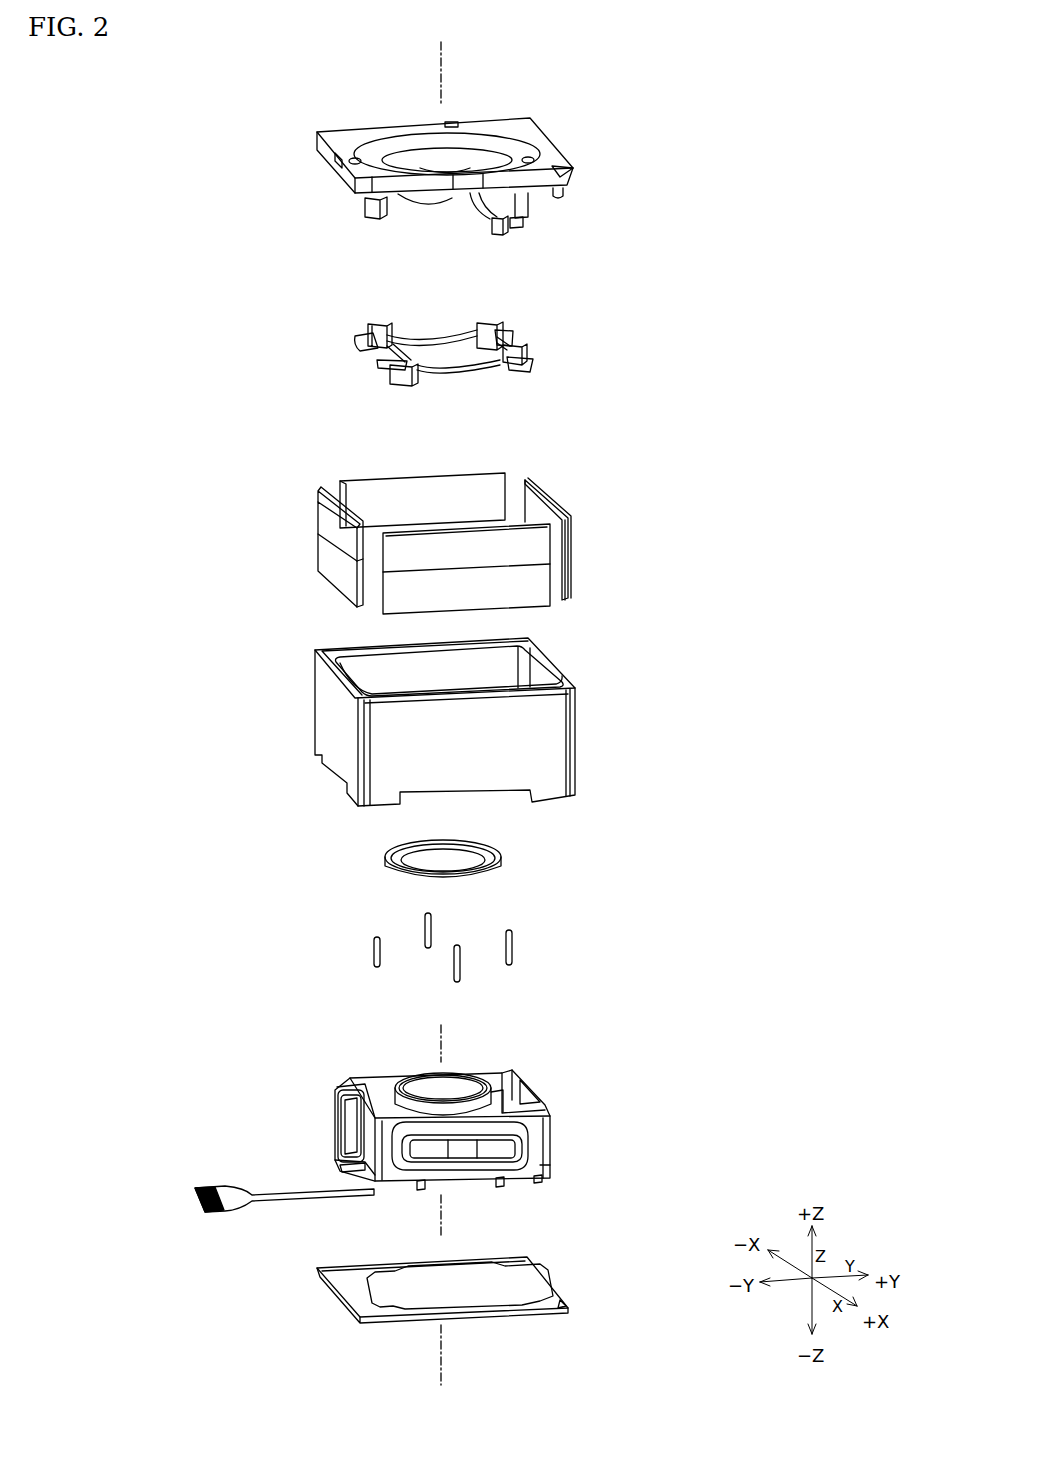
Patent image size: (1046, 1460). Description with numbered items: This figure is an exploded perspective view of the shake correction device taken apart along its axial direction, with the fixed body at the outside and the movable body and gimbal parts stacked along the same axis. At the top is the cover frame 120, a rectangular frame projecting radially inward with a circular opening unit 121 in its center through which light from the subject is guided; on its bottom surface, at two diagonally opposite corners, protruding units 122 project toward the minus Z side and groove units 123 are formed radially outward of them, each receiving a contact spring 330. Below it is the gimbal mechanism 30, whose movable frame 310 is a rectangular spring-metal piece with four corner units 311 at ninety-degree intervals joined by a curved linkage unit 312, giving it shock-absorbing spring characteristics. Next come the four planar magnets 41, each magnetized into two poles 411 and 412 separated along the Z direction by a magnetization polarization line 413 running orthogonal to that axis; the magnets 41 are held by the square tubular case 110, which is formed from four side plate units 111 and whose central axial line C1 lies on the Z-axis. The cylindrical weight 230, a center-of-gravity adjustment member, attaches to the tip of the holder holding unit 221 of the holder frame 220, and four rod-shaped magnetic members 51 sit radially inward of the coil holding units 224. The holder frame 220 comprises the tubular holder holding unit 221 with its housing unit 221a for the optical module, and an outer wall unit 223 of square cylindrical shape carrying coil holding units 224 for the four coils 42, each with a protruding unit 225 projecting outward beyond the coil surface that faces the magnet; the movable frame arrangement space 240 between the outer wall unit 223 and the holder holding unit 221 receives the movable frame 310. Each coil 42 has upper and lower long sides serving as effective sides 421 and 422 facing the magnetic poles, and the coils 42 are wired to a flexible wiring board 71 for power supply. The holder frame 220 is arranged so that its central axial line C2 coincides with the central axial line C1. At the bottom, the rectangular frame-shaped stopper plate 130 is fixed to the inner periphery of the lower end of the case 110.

The central axial line C1 is at (445, 80).
The cover frame 120 is at (455, 161).
The opening unit 121 is at (408, 148).
The protruding units 122 is at (365, 210).
The groove units 123 is at (510, 230).
The gimbal mechanism 30 is at (431, 335).
The movable frame 310 is at (415, 283).
The corner units 311 is at (355, 340).
The linkage unit 312 is at (440, 336).
The contact spring 330 is at (375, 328).
The magnets 41 is at (446, 543).
The magnetic pole 411 is at (482, 487).
The magnetic pole 412 is at (375, 535).
The magnetization polarization line 413 is at (418, 520).
The case 110 is at (447, 747).
The side plate units 111 is at (330, 720).
The weight 230 is at (390, 862).
The magnetic member 51 is at (542, 953).
The holder frame 220 is at (425, 1142).
The holder holding unit 221 is at (470, 1062).
The housing unit 221a is at (427, 1083).
The outer wall unit 223 is at (520, 1095).
The coil holding units 224 is at (505, 1153).
The protruding unit 225 is at (340, 1135).
The movable frame arrangement space 240 is at (382, 1098).
The effective side 421 is at (345, 1110).
The effective side 422 is at (350, 1160).
The coils 42 is at (358, 1175).
The flexible wiring board 71 is at (300, 1195).
The stopper plate 130 is at (560, 1292).
The central axial line C2 is at (445, 1050).